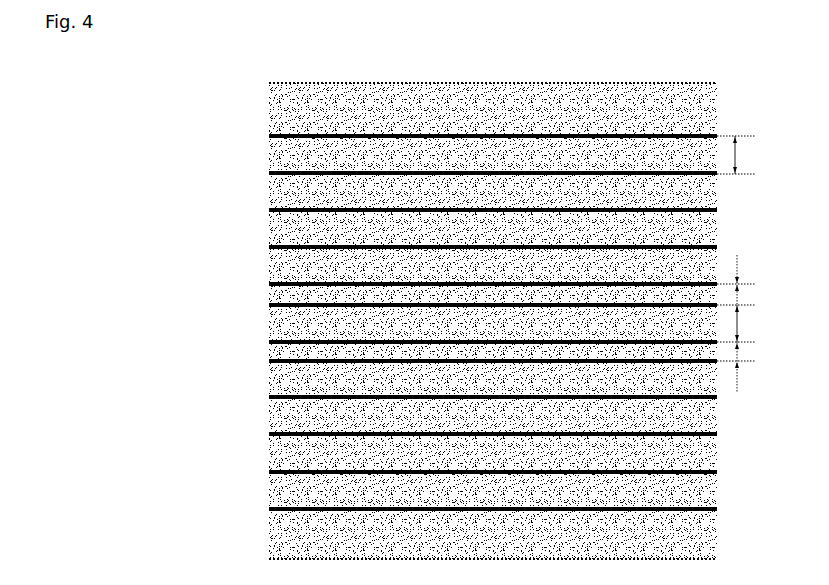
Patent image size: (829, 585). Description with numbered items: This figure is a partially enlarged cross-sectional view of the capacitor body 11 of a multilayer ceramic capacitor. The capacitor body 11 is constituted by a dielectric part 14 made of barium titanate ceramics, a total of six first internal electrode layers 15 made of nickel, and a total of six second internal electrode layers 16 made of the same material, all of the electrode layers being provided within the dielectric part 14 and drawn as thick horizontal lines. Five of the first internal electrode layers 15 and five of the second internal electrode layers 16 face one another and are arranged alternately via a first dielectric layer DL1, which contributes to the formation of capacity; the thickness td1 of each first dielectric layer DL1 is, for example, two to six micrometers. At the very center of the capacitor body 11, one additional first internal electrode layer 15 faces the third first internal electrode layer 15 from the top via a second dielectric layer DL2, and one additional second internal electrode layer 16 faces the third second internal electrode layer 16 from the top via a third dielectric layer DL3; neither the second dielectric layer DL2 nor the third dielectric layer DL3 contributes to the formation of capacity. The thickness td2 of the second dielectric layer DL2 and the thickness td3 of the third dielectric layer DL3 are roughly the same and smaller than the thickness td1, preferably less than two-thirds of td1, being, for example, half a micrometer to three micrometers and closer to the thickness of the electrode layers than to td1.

The capacitor body 11 is at (302, 83).
The dielectric part 14 is at (269, 102).
The first internal electrode layer 15 is at (269, 136).
The second internal electrode layer 16 is at (269, 173).
The first dielectric layer DL1 is at (272, 154).
The second dielectric layer DL2 is at (272, 294).
The third dielectric layer DL3 is at (272, 351).
The thickness of first dielectric layer td1 is at (741, 239).
The thickness of second dielectric layer td2 is at (741, 280).
The thickness of third dielectric layer td3 is at (741, 367).